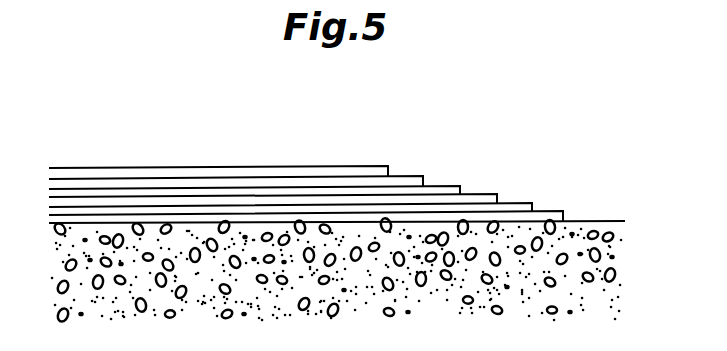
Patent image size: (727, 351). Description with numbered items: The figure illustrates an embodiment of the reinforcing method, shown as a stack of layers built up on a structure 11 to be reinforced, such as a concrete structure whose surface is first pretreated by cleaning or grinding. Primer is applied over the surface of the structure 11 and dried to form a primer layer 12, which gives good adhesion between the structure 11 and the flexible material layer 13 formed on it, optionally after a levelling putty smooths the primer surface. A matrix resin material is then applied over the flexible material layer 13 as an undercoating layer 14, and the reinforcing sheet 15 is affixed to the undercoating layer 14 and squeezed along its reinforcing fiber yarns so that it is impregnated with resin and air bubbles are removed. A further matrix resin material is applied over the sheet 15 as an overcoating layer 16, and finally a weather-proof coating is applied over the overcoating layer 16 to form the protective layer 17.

The structure 11 is at (597, 221).
The primer layer 12 is at (555, 211).
The flexible material layer 13 is at (520, 203).
The undercoating layer 14 is at (485, 194).
The sheet 15 is at (445, 186).
The overcoating layer 16 is at (407, 176).
The protective layer 17 is at (371, 166).